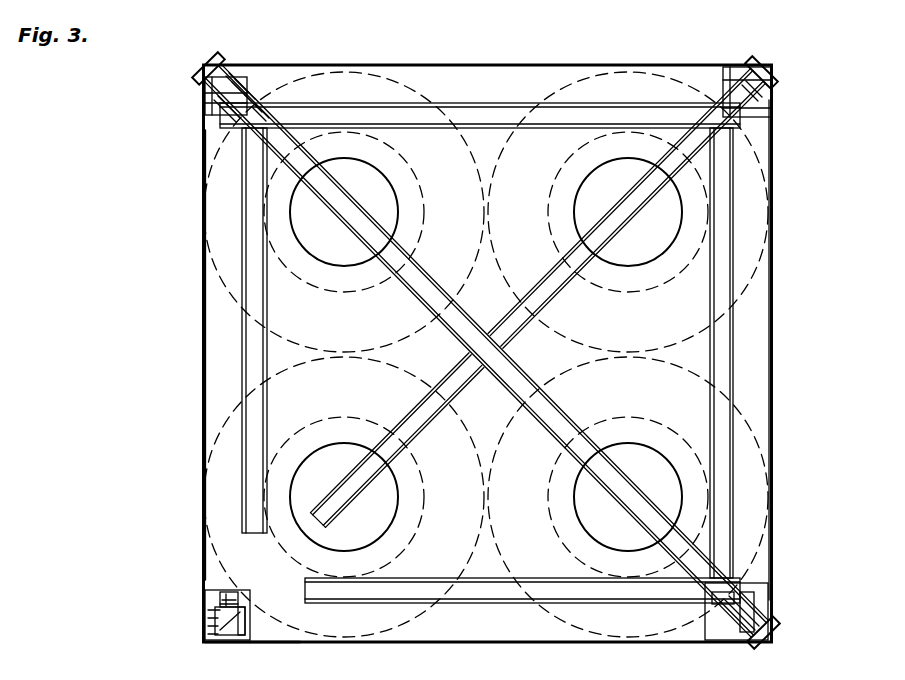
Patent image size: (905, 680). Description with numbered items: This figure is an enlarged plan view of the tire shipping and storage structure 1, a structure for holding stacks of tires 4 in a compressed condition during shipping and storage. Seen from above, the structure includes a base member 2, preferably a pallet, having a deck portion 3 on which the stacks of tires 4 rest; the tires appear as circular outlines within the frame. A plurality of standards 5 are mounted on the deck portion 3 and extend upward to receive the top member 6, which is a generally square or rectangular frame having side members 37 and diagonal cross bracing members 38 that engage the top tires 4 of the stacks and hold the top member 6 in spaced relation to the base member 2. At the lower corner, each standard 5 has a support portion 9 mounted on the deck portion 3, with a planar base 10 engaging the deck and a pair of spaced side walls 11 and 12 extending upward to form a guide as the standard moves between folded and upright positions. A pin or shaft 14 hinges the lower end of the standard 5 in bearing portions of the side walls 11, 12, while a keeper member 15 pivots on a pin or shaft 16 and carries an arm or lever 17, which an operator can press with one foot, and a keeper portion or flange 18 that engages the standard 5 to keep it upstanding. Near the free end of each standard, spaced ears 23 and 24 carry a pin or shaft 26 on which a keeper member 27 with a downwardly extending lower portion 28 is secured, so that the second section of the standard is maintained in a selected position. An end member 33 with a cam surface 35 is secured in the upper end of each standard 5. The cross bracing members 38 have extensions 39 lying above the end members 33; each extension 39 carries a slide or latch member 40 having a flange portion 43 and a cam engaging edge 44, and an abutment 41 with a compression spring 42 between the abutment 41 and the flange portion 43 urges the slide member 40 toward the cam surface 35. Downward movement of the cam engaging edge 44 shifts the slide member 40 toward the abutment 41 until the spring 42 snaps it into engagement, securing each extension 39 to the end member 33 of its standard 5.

The tire shipping and storage structure 1 is at (784, 73).
The base member 2 is at (203, 337).
The deck portion 3 is at (228, 369).
The tires 4 is at (238, 130).
The standards 5 is at (205, 616).
The top member 6 is at (500, 106).
The support portion 9 is at (202, 644).
The planar base 10 is at (218, 603).
The side wall 11 is at (263, 659).
The side wall 12 is at (250, 608).
The pin or shaft 14 is at (752, 598).
The keeper member 15 is at (212, 636).
The pin or shaft 16 is at (210, 610).
The arm or lever 17 is at (210, 628).
The keeper portion or flange 18 is at (210, 620).
The ear 23 is at (238, 597).
The ear 24 is at (220, 603).
The pin or shaft 26 is at (246, 600).
The keeper member 27 is at (228, 596).
The lower portion 28 is at (222, 598).
The end member 33 is at (212, 91).
The cam surface 35 is at (252, 95).
The side members 37 is at (243, 308).
The diagonal cross bracing members 38 is at (562, 404).
The extensions 39 is at (776, 622).
The slide or latch member 40 is at (210, 70).
The abutment 41 is at (262, 128).
The compression spring 42 is at (262, 100).
The flange portion 43 is at (220, 118).
The cam engaging edge 44 is at (755, 72).